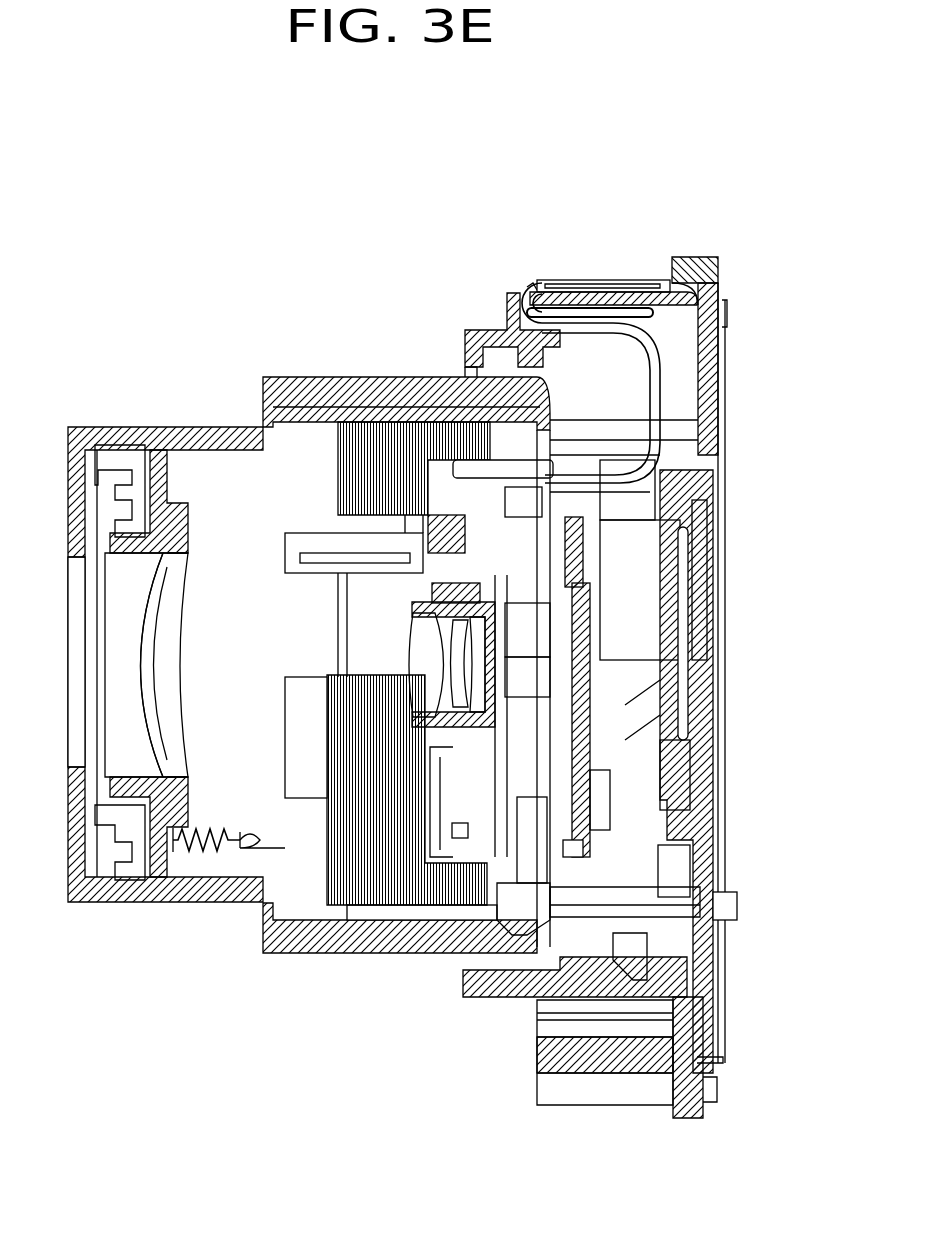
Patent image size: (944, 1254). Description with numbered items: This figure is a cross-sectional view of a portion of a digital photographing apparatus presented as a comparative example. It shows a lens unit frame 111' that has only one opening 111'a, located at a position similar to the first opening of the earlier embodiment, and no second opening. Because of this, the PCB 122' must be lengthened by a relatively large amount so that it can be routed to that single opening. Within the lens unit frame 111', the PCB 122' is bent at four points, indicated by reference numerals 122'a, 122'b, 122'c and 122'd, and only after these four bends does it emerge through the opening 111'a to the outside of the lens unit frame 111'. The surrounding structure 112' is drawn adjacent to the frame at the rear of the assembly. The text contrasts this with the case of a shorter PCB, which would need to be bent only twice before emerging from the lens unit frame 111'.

The lens unit frame 111' is at (470, 330).
The opening 111'a is at (548, 228).
The base frame 112' is at (643, 687).
The PCB 122' is at (603, 244).
The bending point of PCB 122'a is at (689, 416).
The bending point of PCB 122'b is at (525, 299).
The bending point of PCB 122'c is at (680, 301).
The bending point of PCB 122'd is at (486, 244).